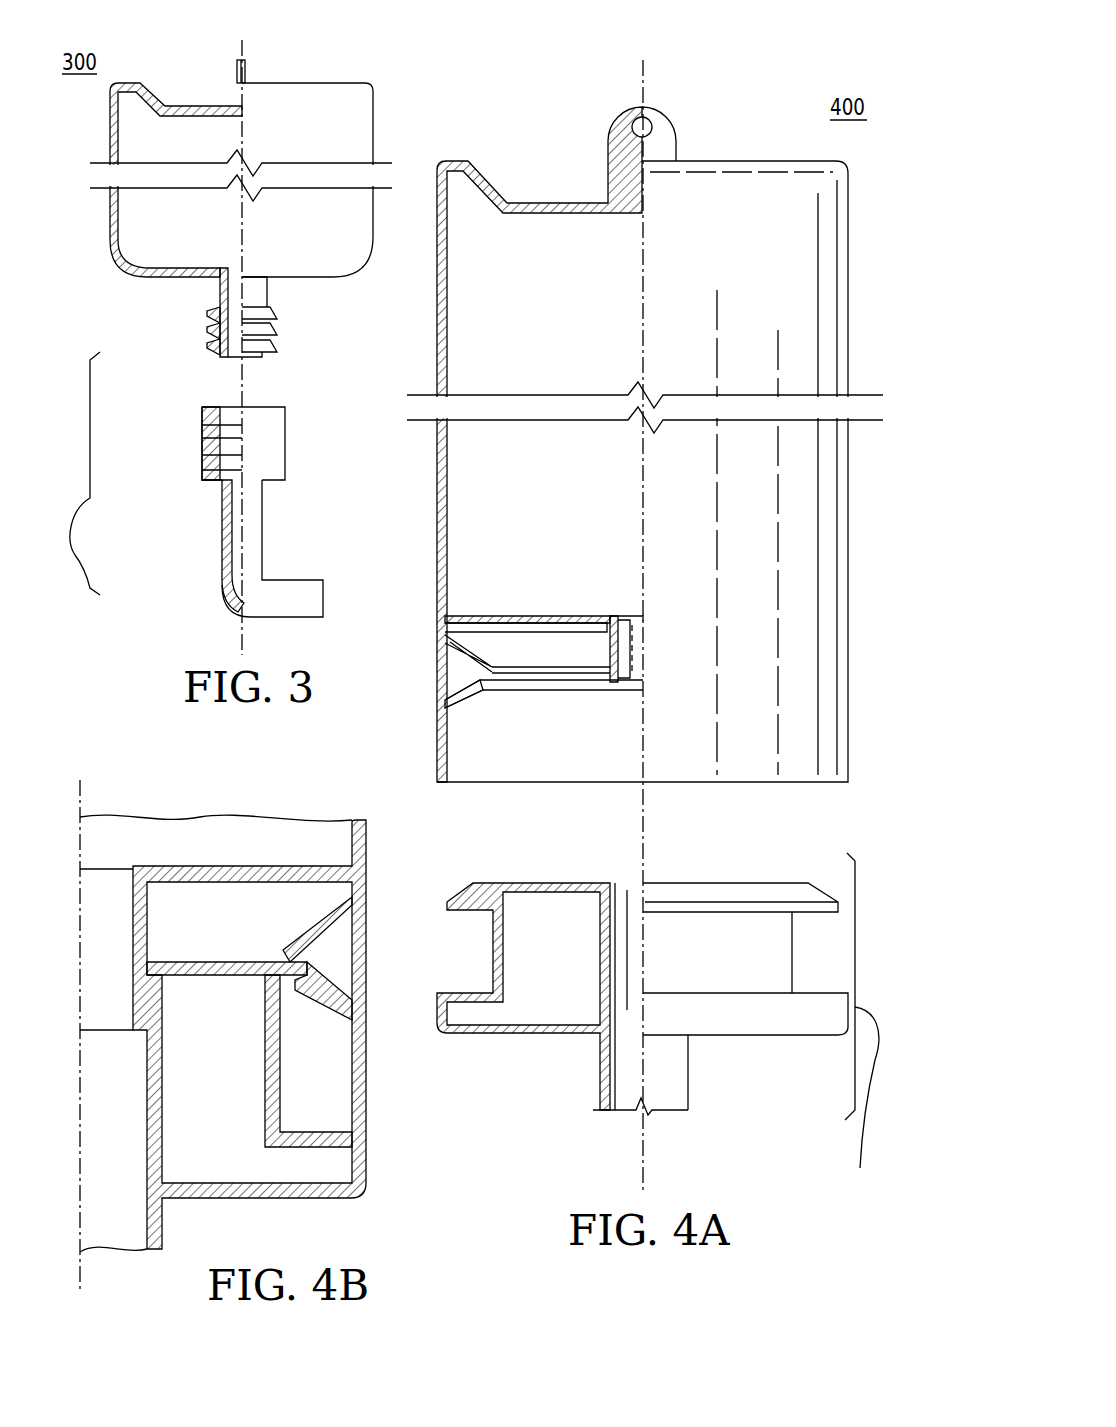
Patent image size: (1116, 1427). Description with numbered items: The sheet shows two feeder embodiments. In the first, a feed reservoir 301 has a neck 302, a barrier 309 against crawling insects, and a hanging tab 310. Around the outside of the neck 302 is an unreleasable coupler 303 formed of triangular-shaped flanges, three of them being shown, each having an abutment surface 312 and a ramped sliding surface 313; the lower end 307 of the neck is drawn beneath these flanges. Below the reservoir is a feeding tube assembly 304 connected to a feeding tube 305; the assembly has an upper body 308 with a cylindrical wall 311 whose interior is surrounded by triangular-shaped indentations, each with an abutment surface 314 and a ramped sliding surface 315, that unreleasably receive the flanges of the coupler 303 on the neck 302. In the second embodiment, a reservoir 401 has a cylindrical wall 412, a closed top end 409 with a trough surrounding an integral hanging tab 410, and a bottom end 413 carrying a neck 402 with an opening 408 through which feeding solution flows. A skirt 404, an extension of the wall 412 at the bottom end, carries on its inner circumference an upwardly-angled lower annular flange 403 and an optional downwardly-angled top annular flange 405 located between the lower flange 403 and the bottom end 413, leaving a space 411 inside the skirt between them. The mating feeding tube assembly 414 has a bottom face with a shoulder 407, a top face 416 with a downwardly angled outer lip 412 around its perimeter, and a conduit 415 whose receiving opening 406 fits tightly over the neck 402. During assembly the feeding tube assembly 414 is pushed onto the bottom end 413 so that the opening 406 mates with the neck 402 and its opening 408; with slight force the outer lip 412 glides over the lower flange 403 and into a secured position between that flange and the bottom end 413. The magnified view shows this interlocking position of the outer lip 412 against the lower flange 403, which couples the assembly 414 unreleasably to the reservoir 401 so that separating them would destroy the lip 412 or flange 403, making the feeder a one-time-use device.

In FIG. 3, the feed reservoir 301 is at (340, 108).
In FIG. 3, the neck 302 is at (217, 293).
In FIG. 3, the unreleasable coupler 303 is at (218, 315).
In FIG. 3, the feeding tube assembly 304 is at (76, 489).
In FIG. 3, the feeding tube 305 is at (263, 522).
In FIG. 3, the post end 307 is at (268, 360).
In FIG. 3, the nut body 308 is at (217, 406).
In FIG. 3, the barrier against crawling insect 309 is at (172, 92).
In FIG. 3, the hanging tab 310 is at (248, 63).
In FIG. 3, the cylindrical wall 311 is at (208, 448).
In FIG. 3, the abutment surface 312 is at (278, 298).
In FIG. 3, the ramped sliding surface 313 is at (278, 318).
In FIG. 3, the abutment surface 314 is at (210, 481).
In FIG. 3, the ramped sliding surface 315 is at (208, 428).
In FIG. 4A, the reservoir 401 is at (720, 242).
In FIG. 4A, the neck 402 is at (604, 670).
In FIG. 4A, the lower annular flange 403 is at (465, 705).
In FIG. 4B, the lower annular flange 403 is at (337, 988).
In FIG. 4A, the skirt 404 is at (447, 683).
In FIG. 4A, the top annular flange 405 is at (452, 652).
In FIG. 4B, the top annular flange 405 is at (284, 952).
In FIG. 4A, the receiving opening 406 is at (637, 888).
In FIG. 4B, the receiving opening 406 is at (165, 1216).
In FIG. 4A, the shoulder 407 is at (457, 993).
In FIG. 4B, the shoulder 407 is at (113, 893).
In FIG. 4A, the opening 408 is at (623, 630).
In FIG. 4A, the closed top end 409 is at (518, 173).
In FIG. 4A, the hanging tab 410 is at (673, 110).
In FIG. 4A, the gap 411 is at (452, 670).
In FIG. 4A, the cylindrical wall 412 is at (437, 500).
In FIG. 4B, the cylindrical wall 412 is at (333, 973).
In FIG. 4A, the bottom end 413 is at (470, 613).
In FIG. 4A, the feeding tube assembly 414 is at (866, 1026).
In FIG. 4A, the conduit 415 is at (600, 1070).
In FIG. 4A, the top face 416 is at (545, 883).
In FIG. 4B, the top face 416 is at (204, 962).